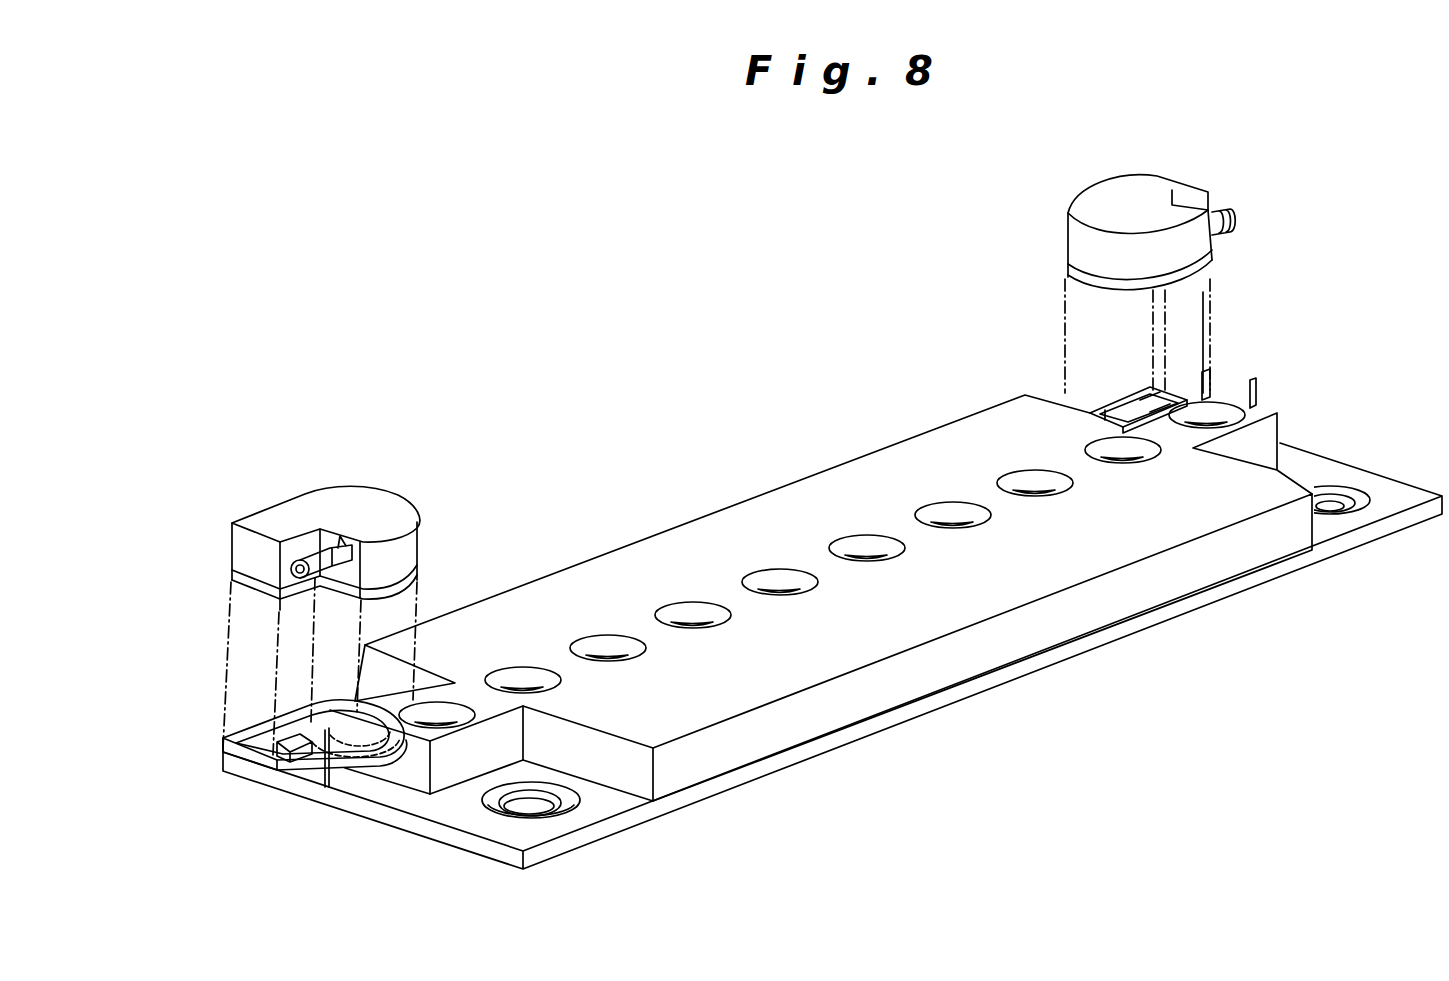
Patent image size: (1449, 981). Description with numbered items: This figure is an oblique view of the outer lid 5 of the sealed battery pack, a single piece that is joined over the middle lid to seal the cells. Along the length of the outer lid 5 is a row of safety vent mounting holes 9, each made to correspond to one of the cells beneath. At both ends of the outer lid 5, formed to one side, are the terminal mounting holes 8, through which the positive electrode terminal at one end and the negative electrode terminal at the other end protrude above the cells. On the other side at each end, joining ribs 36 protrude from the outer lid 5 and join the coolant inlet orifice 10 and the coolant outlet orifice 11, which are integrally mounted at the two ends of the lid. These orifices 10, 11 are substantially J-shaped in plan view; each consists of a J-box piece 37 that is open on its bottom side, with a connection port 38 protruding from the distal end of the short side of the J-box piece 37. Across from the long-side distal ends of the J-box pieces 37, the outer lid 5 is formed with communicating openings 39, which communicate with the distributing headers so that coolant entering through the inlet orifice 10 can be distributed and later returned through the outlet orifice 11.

The outer lid 5 is at (740, 490).
The terminal mounting holes 8 is at (537, 810).
The safety vent mounting holes 9 is at (600, 648).
The coolant inlet orifice 10 is at (286, 486).
The coolant outlet orifice 11 is at (1097, 181).
The joining ribs 36 is at (257, 740).
The J-box pieces 37 is at (372, 508).
The connection ports 38 is at (322, 556).
The communicating openings 39 is at (268, 750).